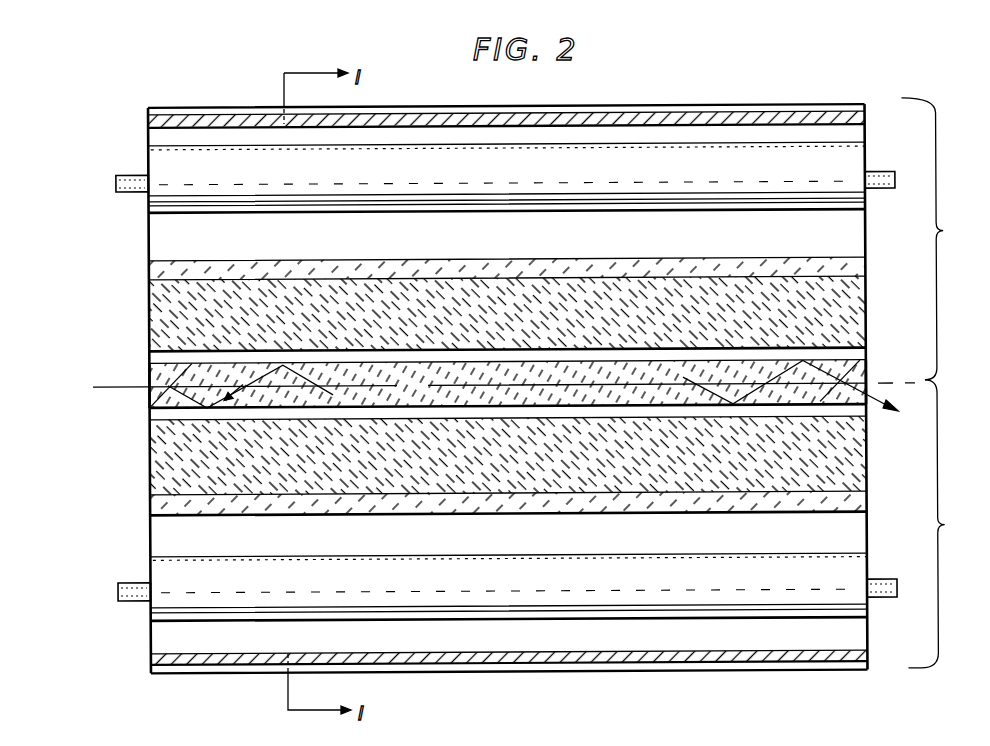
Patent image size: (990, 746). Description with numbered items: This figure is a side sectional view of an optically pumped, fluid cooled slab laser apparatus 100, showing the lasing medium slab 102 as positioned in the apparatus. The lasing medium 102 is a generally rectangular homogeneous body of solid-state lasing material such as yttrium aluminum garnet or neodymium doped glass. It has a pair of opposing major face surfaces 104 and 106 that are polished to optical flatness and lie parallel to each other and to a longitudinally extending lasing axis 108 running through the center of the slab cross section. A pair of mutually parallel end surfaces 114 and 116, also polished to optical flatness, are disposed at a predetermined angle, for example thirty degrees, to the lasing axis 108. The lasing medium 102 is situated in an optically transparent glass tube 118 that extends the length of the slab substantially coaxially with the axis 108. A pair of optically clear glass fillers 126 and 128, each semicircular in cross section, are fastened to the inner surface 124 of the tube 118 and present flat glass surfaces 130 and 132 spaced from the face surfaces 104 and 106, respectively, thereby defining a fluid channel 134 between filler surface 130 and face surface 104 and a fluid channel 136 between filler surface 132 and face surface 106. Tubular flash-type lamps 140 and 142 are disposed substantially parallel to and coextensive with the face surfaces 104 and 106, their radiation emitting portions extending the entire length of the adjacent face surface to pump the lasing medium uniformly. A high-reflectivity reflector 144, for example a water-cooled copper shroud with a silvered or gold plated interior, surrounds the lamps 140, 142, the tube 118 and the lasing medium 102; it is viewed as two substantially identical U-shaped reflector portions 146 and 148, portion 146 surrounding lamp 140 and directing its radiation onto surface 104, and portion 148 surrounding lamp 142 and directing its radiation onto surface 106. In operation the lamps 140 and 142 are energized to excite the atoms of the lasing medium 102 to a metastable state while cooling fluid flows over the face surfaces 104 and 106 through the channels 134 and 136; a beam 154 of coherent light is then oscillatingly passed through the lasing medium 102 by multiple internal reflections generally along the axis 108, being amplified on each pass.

The slab laser apparatus 100 is at (787, 719).
The lasing medium slab 102 is at (160, 380).
The major face surface 104 is at (573, 363).
The major face surface 106 is at (238, 408).
The lasing axis 108 is at (110, 391).
The end surface 114 is at (148, 404).
The end surface 116 is at (868, 380).
The tube 118 is at (173, 272).
The inner surface of tube 124 is at (239, 275).
The glass filler 126 is at (336, 290).
The glass filler 128 is at (462, 470).
The flat glass surface 130 is at (482, 356).
The flat glass surface 132 is at (298, 415).
The fluid channel 134 is at (432, 355).
The fluid channel 136 is at (381, 412).
The tubular lamp 140 is at (822, 174).
The tubular lamp 142 is at (759, 584).
The reflector 144 is at (147, 122).
The reflector portion 146 is at (942, 239).
The reflector portion 148 is at (947, 523).
The beam 154 is at (195, 361).